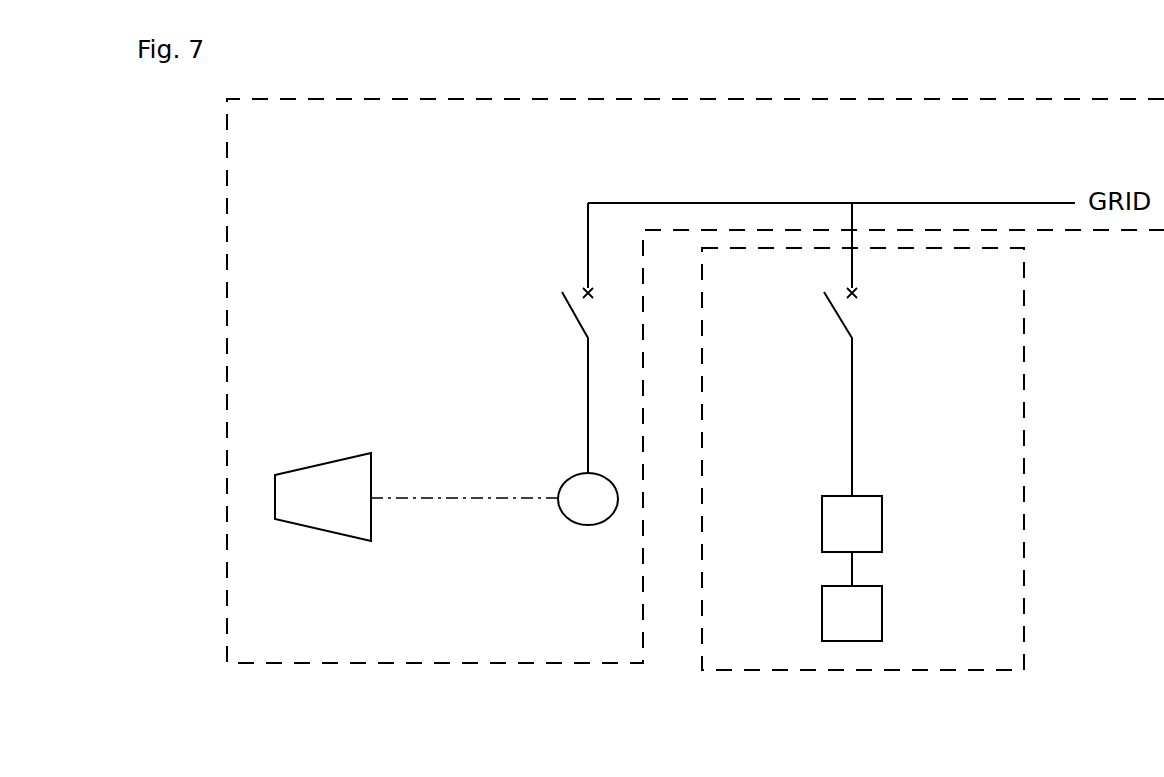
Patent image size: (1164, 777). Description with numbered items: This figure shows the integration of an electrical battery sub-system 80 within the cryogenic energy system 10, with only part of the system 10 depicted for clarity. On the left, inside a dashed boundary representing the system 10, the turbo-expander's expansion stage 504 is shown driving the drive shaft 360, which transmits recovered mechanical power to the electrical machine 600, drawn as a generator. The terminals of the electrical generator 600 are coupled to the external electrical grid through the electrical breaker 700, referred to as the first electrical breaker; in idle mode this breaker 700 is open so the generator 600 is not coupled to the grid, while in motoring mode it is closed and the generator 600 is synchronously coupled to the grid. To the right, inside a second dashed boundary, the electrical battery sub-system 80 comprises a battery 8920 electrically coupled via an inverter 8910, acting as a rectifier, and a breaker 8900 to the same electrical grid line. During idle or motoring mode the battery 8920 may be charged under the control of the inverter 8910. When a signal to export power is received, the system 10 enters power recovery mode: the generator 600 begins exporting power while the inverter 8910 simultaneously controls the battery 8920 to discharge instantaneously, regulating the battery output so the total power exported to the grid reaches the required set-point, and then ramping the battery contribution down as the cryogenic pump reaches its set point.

The system 10 is at (695, 404).
The electrical battery sub-system 80 is at (863, 478).
The expansion stage 504 is at (323, 497).
The drive shaft 360 is at (464, 530).
The electrical machine 600 is at (588, 518).
The electrical breaker 700 is at (534, 338).
The breaker 8900 is at (793, 349).
The inverter 8910 is at (889, 541).
The battery 8920 is at (889, 613).